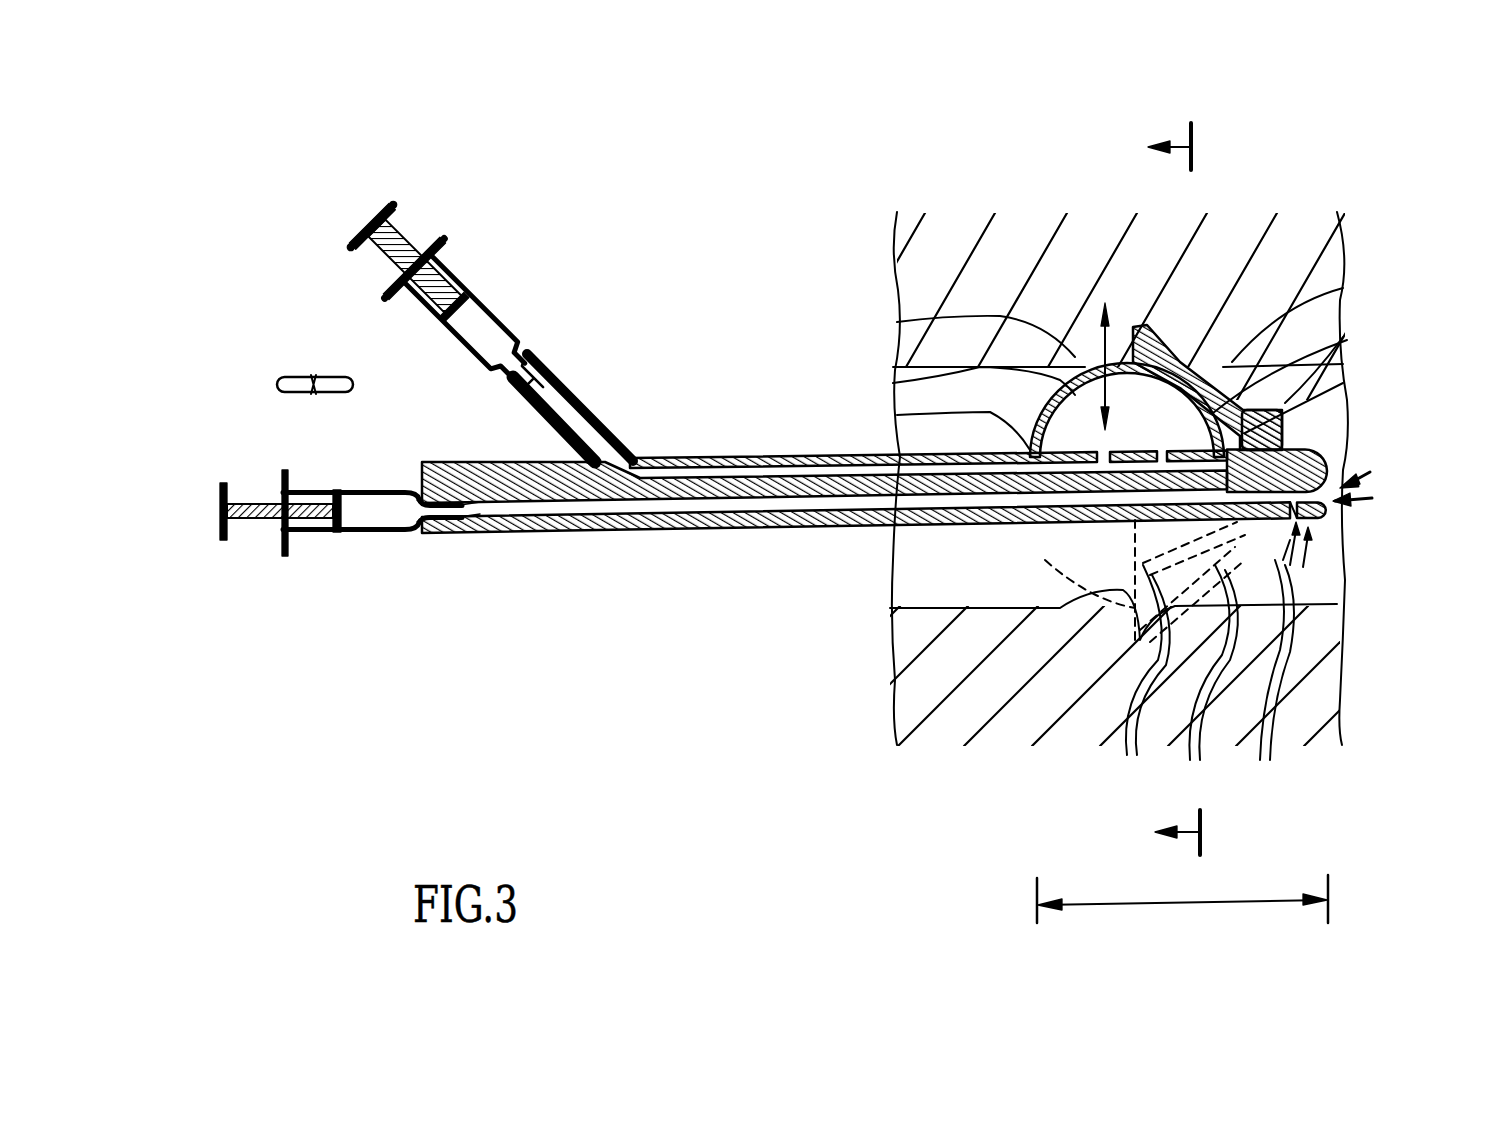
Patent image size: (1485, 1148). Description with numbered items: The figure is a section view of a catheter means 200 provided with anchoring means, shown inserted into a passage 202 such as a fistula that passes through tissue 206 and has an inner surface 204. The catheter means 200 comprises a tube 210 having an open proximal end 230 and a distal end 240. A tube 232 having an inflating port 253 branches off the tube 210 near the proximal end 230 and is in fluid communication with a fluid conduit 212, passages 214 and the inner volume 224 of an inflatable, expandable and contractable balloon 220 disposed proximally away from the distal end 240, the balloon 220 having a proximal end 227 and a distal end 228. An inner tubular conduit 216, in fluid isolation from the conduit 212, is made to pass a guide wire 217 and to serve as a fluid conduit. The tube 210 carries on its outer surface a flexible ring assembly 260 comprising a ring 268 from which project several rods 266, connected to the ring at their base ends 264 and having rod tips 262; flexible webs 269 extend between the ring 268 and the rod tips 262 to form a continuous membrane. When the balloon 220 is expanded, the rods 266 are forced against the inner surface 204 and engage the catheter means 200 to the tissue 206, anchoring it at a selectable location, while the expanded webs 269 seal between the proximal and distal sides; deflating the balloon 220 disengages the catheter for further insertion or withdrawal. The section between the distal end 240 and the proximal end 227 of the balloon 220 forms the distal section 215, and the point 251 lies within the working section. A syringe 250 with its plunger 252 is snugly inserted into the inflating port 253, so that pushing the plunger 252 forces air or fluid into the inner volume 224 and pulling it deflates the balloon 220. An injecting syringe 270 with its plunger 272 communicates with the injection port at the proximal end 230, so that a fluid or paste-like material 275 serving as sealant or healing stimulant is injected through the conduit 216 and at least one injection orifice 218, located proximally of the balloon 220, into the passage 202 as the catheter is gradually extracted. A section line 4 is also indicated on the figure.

The catheter means 200 is at (705, 254).
The passage 202 is at (1330, 527).
The inner surface 204 is at (1330, 620).
The tissue 206 is at (1315, 670).
The tube 210 is at (773, 457).
The fluid conduit 212 is at (712, 473).
The passages 214 is at (1162, 455).
The distal section 215 is at (1182, 895).
The inner tubular conduit 216 is at (665, 530).
The guide wire 217 is at (290, 380).
The injection orifice 218 is at (1372, 487).
The balloon 220 is at (893, 383).
The inner volume 224 is at (897, 324).
The proximal end of balloon 227 is at (897, 415).
The distal end of balloon 228 is at (1335, 332).
The proximal end 230 is at (425, 532).
The tube 232 is at (585, 410).
The distal end 240 is at (1343, 470).
The syringe 250 is at (501, 318).
The point 251 is at (640, 455).
The plunger 252 is at (393, 205).
The inflating port 253 is at (523, 357).
The ring assembly 260 is at (1340, 365).
The rod tips 262 is at (1143, 327).
The base ends 264 is at (1268, 679).
The rods 266 is at (1330, 290).
The ring 268 is at (1288, 424).
The flexible webs 269 is at (1085, 615).
The syringe 270 is at (368, 533).
The plunger 272 is at (218, 535).
The material 275 is at (385, 500).
The section line 4 is at (1165, 489).